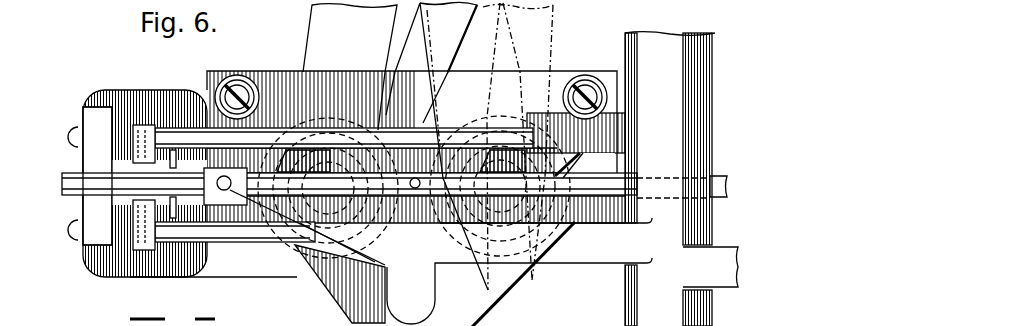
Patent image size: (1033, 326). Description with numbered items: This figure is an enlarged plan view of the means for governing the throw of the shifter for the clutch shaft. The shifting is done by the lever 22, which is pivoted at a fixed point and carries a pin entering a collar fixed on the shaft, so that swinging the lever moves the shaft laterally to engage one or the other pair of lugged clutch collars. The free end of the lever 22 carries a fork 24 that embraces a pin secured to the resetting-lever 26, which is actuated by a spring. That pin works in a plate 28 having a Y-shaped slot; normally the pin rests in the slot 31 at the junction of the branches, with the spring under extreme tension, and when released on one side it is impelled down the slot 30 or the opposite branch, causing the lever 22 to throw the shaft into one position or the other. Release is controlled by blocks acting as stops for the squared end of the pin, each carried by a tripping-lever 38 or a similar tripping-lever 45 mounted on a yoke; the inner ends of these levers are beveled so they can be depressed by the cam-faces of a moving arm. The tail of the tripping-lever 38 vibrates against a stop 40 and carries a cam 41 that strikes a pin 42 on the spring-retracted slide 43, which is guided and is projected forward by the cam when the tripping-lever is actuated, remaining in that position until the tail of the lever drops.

The lever 22 is at (395, 66).
The fork 24 is at (296, 278).
The resetting-lever 26 is at (467, 146).
The plate 28 is at (514, 239).
The slot 30 is at (414, 187).
The slot 31 is at (519, 271).
The tripping-lever 38 is at (606, 264).
The stop 40 is at (113, 279).
The cam 41 is at (125, 198).
The pin 42 is at (176, 212).
The spring-retracted slide 43 is at (62, 183).
The tripping-lever 45 is at (178, 130).